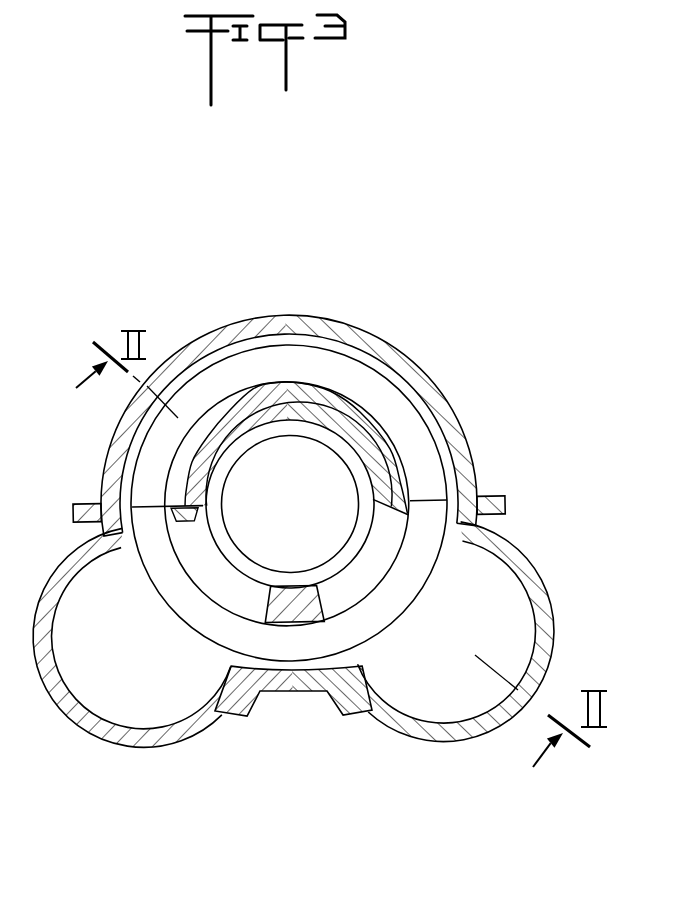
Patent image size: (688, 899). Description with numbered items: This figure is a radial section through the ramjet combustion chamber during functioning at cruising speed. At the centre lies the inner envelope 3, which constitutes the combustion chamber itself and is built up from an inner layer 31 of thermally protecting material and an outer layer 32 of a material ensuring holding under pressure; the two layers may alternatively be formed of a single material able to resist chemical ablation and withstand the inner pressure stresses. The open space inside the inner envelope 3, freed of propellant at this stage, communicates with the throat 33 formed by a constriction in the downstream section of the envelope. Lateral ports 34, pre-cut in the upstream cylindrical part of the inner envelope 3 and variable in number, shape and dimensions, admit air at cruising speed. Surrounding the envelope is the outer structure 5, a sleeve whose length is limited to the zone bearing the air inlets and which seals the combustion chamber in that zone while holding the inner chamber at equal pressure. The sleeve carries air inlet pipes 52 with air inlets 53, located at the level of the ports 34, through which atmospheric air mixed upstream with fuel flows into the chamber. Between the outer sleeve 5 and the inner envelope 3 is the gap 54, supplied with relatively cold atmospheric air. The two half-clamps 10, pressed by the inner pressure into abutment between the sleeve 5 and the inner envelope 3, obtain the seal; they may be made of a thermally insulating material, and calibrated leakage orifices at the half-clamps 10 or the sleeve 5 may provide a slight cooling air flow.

The inner envelope 3 is at (415, 464).
The outer structure 5 is at (289, 315).
The half-clamps 10 is at (403, 413).
The inner layer 31 is at (299, 405).
The outer layer 32 is at (300, 388).
The throat 33 is at (338, 458).
The lateral ports 34 is at (204, 524).
The air inlet pipes 52 is at (54, 703).
The air inlets 53 is at (142, 653).
The gap 54 is at (356, 349).